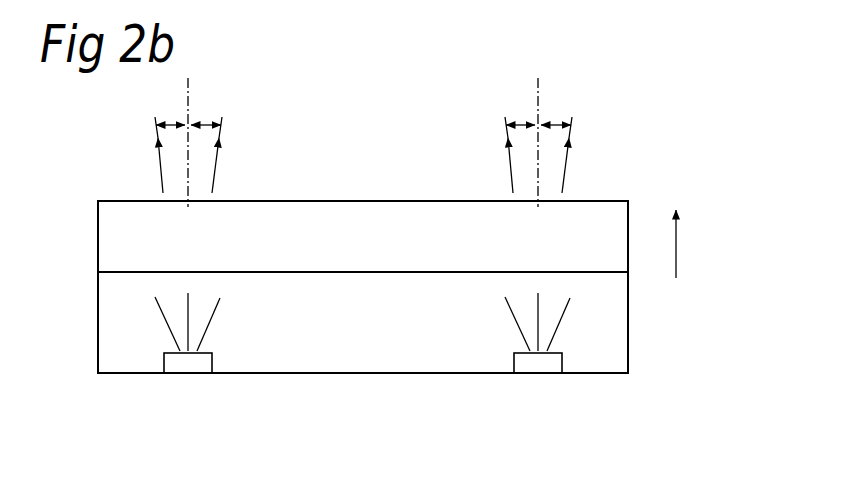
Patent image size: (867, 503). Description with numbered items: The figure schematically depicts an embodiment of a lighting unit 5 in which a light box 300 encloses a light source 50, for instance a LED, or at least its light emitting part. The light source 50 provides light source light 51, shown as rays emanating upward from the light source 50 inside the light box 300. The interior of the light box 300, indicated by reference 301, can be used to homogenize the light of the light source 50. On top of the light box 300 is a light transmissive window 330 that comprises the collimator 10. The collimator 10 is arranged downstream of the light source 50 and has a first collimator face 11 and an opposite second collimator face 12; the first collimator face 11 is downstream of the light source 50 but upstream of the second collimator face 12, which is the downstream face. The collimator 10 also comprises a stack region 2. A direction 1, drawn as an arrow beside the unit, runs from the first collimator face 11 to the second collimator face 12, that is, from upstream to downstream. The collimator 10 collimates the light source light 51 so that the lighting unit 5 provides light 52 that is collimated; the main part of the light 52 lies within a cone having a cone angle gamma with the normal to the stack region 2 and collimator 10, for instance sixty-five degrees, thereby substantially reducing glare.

The direction 1 is at (676, 250).
The stack region 2 is at (91, 249).
The lighting unit 5 is at (639, 177).
The collimator 10 is at (91, 211).
The first collimator face 11 is at (335, 273).
The second collimator face 12 is at (353, 201).
The light source 50 is at (174, 363).
The light source light 51 is at (166, 317).
The light 52 is at (158, 163).
The light box 300 is at (635, 324).
The interior of the light box 301 is at (357, 333).
The light transmissive window 330 is at (605, 172).